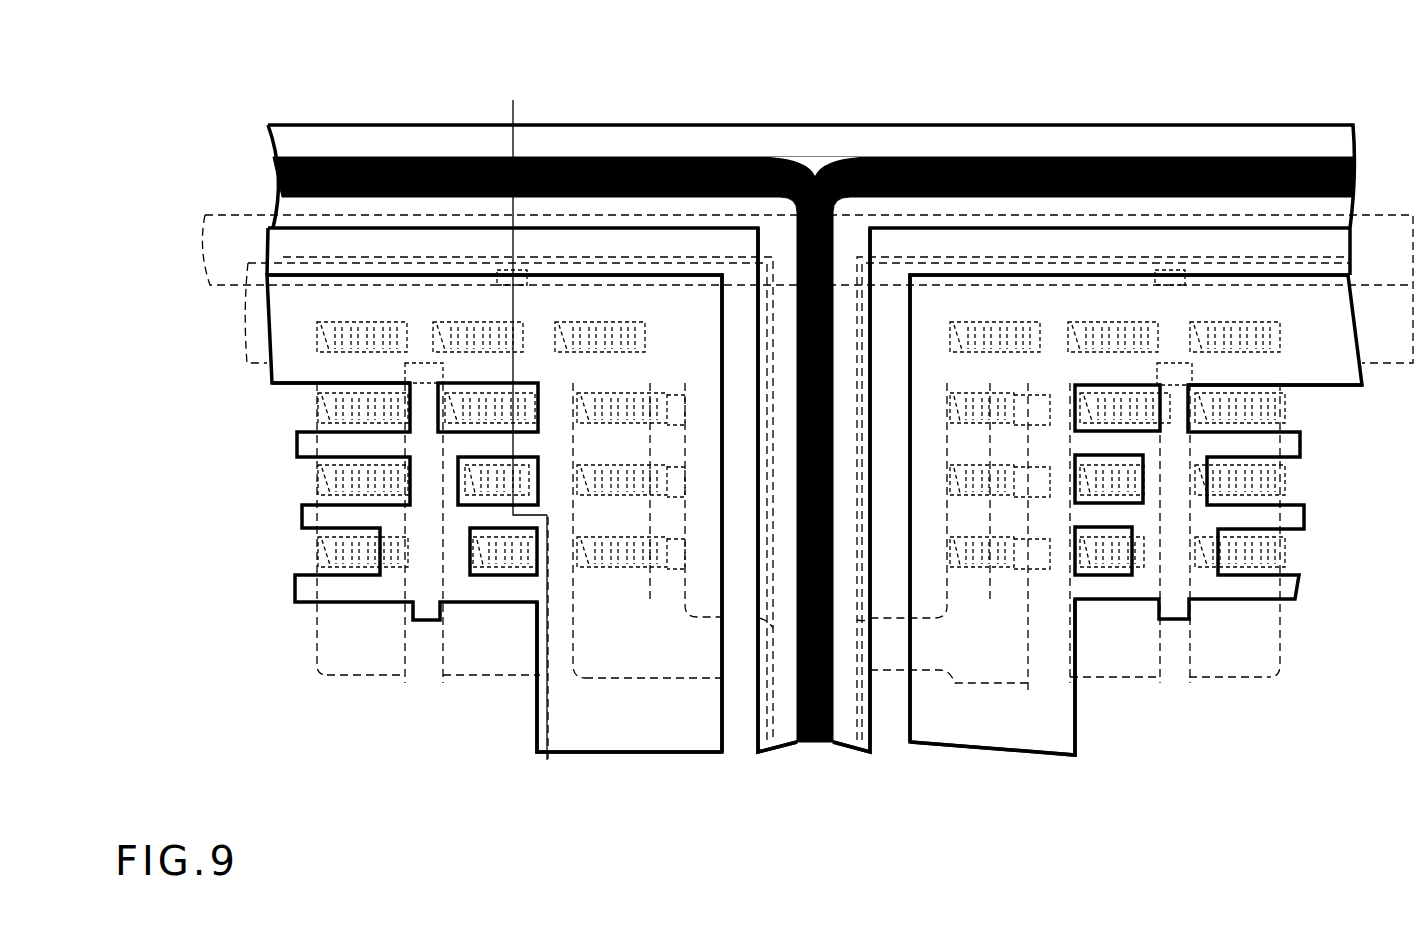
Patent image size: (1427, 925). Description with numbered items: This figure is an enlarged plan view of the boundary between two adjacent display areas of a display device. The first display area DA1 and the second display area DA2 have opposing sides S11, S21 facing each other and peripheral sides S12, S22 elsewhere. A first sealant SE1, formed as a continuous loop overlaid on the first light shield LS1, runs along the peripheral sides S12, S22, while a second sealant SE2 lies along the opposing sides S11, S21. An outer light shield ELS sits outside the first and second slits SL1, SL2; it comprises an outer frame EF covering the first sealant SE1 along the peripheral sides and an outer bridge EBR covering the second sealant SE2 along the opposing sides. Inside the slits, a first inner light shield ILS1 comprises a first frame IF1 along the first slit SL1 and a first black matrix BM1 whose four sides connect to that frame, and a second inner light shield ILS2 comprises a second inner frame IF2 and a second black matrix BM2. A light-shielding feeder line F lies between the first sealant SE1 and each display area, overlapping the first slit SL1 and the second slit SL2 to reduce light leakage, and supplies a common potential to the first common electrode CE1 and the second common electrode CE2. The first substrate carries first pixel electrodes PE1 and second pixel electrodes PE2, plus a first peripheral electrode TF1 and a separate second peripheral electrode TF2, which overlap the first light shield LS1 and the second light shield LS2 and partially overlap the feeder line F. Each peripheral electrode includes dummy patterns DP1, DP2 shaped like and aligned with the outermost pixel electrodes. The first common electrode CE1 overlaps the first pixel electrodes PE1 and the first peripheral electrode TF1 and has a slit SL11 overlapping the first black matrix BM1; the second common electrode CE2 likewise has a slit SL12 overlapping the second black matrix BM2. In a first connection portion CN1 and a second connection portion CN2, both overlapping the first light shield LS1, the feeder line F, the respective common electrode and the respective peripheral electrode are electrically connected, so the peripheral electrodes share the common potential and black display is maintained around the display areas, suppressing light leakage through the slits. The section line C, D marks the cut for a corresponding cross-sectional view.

The outer light shield ELS is at (845, 57).
The outer frame EF is at (712, 140).
The outer bridge EBR is at (783, 277).
The first sealant SE1 is at (333, 157).
The second sealant SE2 is at (813, 745).
The first light shield LS1 is at (176, 112).
The second light shield LS2 is at (1050, 812).
The first common electrode CE1 is at (430, 263).
The second common electrode CE2 is at (1077, 263).
The first connection portion CN1 is at (512, 270).
The second connection portion CN2 is at (1167, 270).
The first peripheral electrode TF1 is at (540, 257).
The second peripheral electrode TF2 is at (1203, 260).
The first slit SL1 is at (263, 228).
The second slit SL2 is at (1353, 228).
The feeder line F is at (228, 215).
The peripheral side S12 is at (298, 392).
The peripheral side S22 is at (1330, 390).
The first pixel electrode PE1 is at (503, 578).
The second pixel electrode PE2 is at (1125, 576).
The first display area DA1 is at (347, 736).
The second display area DA2 is at (1352, 744).
The slit SL11 is at (443, 683).
The slit SL12 is at (1070, 683).
The first inner light shield ILS1 is at (487, 803).
The second inner light shield ILS2 is at (1243, 793).
The first black matrix BM1 is at (413, 623).
The second black matrix BM2 is at (1187, 615).
The first frame IF1 is at (538, 700).
The second inner frame IF2 is at (1078, 720).
The opposing side S11 is at (537, 735).
The opposing side S21 is at (1077, 750).
The dummy pattern DP1 is at (600, 573).
The dummy pattern DP2 is at (995, 575).
The section line C is at (513, 100).
The section line D is at (547, 760).